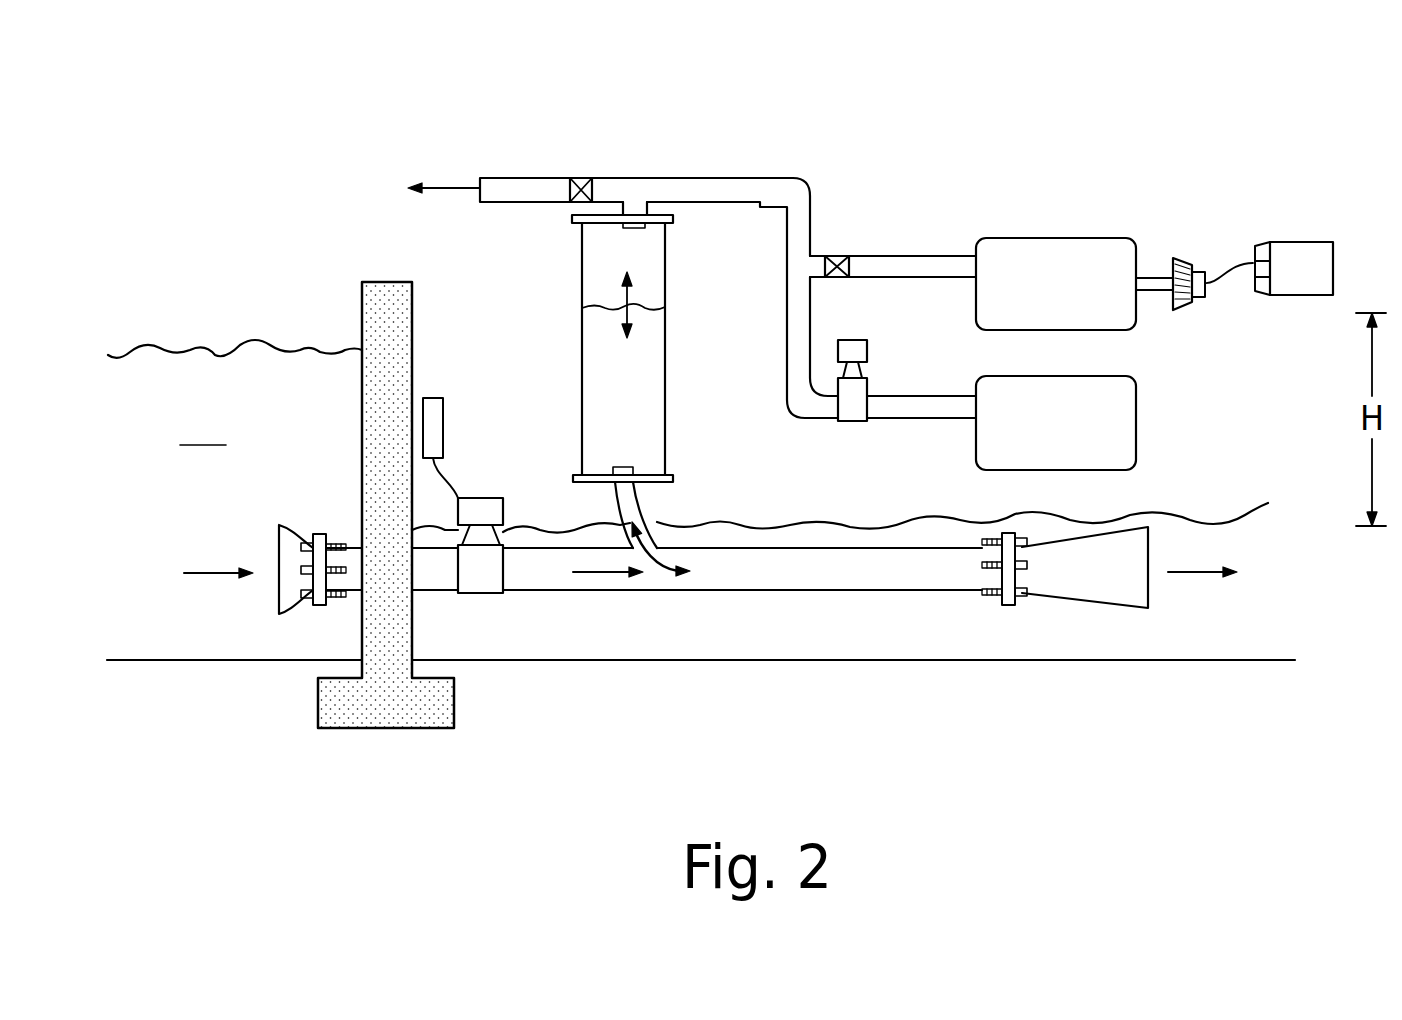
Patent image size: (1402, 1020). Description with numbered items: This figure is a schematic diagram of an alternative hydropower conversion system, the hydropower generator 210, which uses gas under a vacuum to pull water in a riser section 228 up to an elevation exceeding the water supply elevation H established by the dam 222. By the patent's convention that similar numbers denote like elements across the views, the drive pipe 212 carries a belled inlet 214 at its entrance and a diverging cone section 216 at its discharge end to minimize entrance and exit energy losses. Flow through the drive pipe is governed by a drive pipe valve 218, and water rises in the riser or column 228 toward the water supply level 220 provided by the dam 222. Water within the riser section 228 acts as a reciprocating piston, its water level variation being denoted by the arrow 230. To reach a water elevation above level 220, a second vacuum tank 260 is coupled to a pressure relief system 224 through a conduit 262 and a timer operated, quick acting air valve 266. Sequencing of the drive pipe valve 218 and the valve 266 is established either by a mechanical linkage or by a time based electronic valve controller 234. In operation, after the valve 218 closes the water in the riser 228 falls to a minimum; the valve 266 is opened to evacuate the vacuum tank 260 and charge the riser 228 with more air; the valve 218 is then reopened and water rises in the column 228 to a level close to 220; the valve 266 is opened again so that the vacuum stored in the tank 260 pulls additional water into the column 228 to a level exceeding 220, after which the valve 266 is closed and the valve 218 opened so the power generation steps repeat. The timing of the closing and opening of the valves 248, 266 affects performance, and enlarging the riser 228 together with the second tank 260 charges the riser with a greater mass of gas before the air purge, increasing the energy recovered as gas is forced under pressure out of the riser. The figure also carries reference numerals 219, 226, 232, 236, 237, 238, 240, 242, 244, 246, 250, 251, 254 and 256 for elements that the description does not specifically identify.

The hydropower generator 210 is at (940, 610).
The drive pipe 212 is at (355, 548).
The belled inlet 214 is at (277, 545).
The diverging cone section 216 is at (1113, 607).
The drive pipe valve 218 is at (482, 585).
The water flow 219 is at (208, 577).
The water supply level 220 is at (275, 315).
The dam 222 is at (412, 314).
The pressure relief system 224 is at (696, 485).
The connecting pipe 226 is at (617, 517).
The riser section 228 is at (695, 355).
The water level variation arrow 230 is at (622, 296).
The body of water 232 is at (203, 424).
The time based electronic valve controller 234 is at (445, 422).
The valve 236 is at (838, 256).
The air pipe 237 is at (710, 178).
The air port 238 is at (655, 237).
The generator 240 is at (1068, 238).
The water port 242 is at (653, 463).
The tank 244 is at (595, 365).
The turbine 246 is at (1174, 254).
The valve 248 is at (1291, 241).
The valve 250 is at (580, 178).
The flow arrow 251 is at (663, 572).
The flow arrow 254 is at (600, 575).
The air outlet 256 is at (450, 187).
The second vacuum tank 260 is at (1142, 414).
The conduit 262 is at (810, 310).
The quick acting air valve 266 is at (850, 423).